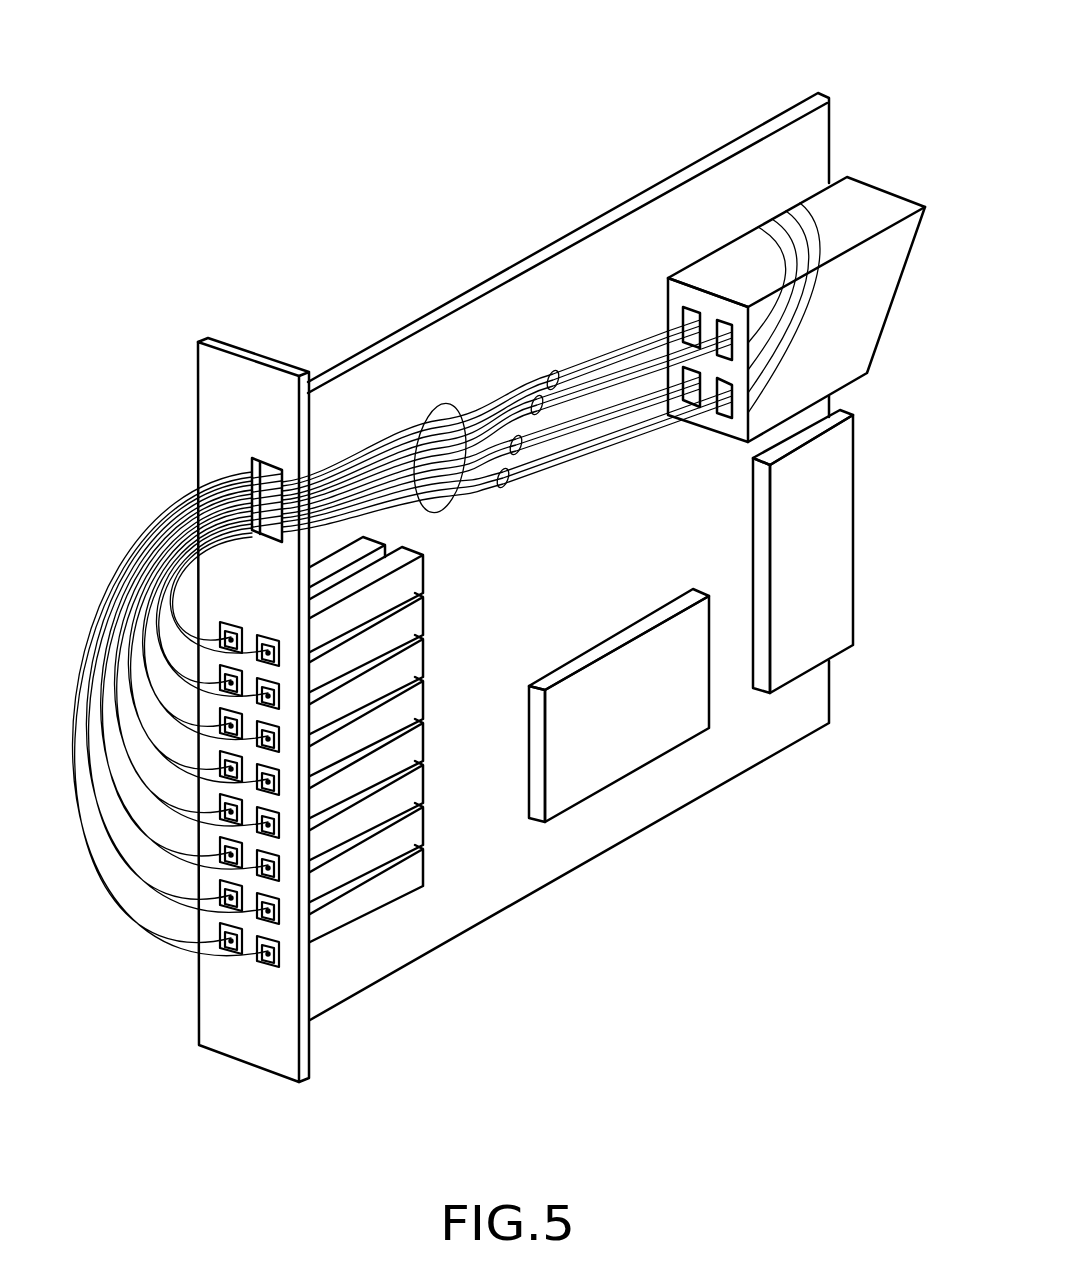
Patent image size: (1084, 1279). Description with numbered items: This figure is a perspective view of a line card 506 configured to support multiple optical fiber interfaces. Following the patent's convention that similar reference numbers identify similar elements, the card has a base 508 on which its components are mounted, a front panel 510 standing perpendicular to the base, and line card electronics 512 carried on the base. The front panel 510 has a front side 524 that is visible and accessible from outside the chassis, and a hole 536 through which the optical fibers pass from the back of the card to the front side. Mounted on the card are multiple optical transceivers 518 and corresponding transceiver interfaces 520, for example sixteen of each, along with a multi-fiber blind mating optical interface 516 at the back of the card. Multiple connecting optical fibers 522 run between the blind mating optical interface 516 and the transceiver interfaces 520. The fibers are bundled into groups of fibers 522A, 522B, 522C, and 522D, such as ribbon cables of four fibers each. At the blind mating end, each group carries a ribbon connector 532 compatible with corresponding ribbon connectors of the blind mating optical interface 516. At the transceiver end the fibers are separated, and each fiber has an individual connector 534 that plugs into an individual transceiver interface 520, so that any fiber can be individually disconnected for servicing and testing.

The line card 506 is at (497, 88).
The circuit board 508 is at (758, 126).
The front panel 510 is at (197, 370).
The electronic component 512 is at (651, 745).
The multi-fiber blind mating optical interface 516 is at (866, 332).
The optical transceivers 518 is at (426, 860).
The transceiver interfaces 520 is at (262, 950).
The connecting optical fibers 522 is at (452, 512).
The group of fibers 522A is at (553, 370).
The group of fibers 522B is at (535, 395).
The group of fibers 522C is at (524, 450).
The group of fibers 522D is at (508, 489).
The module 524 is at (222, 425).
The ribbon connector 532 is at (772, 226).
The individual connector 534 is at (264, 962).
The fiber feed-through connector 536 is at (261, 459).